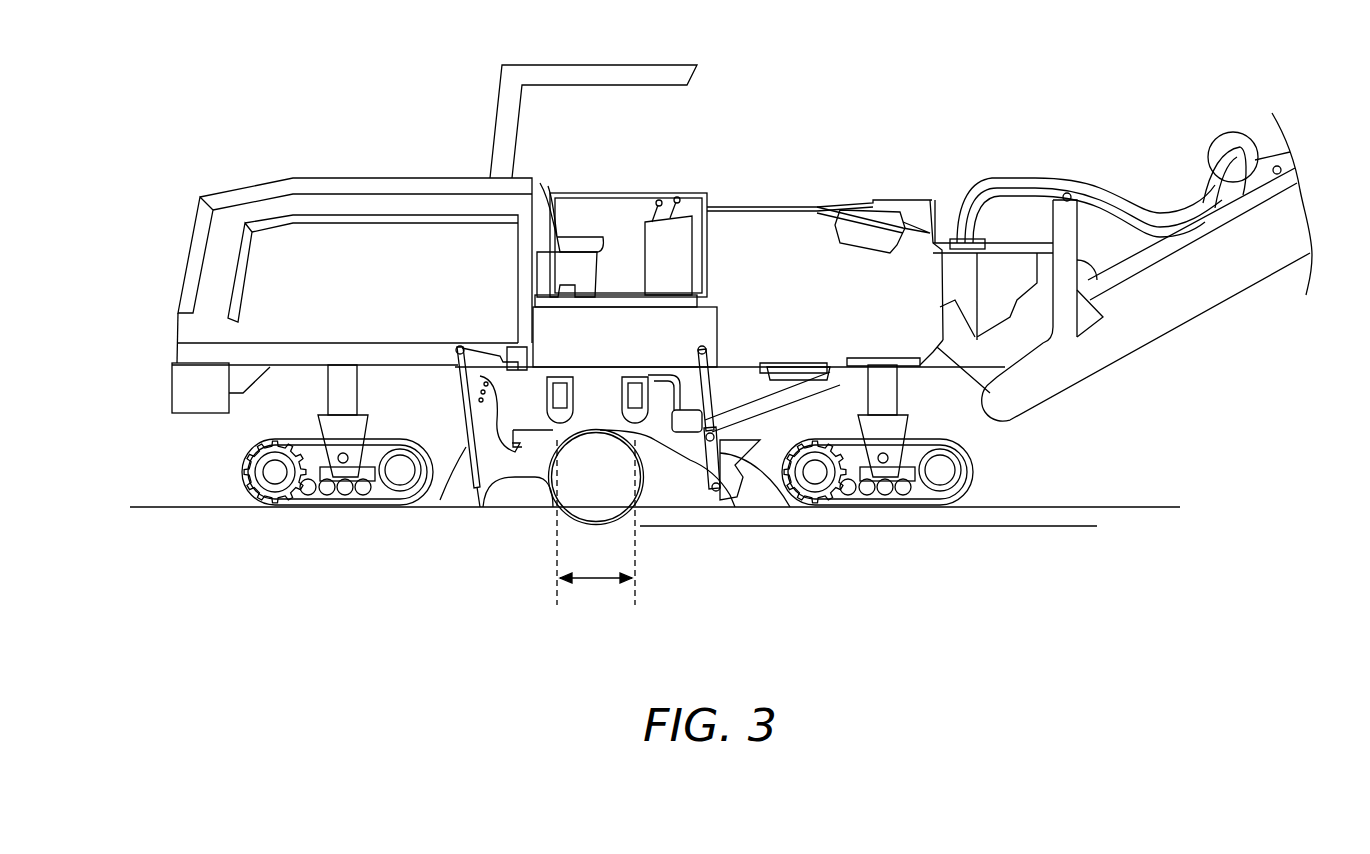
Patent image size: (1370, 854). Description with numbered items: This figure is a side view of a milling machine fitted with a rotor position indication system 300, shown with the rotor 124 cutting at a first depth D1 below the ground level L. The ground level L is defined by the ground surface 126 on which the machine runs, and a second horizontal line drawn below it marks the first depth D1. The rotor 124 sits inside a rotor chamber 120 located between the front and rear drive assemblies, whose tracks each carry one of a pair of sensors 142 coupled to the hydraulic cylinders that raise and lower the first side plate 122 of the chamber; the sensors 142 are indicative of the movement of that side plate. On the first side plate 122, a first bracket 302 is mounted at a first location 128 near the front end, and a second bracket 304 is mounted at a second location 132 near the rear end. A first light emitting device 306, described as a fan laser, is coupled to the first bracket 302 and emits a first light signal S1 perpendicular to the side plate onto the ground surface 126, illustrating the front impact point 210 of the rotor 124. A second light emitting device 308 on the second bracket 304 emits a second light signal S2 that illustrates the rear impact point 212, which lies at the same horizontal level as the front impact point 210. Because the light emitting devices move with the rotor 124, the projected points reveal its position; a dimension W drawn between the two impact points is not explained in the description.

The rotor chamber 120 is at (507, 520).
The first side plate 122 is at (727, 492).
The rotor 124 is at (553, 510).
The ground surface 126 is at (1157, 507).
The first location 128 is at (695, 475).
The second location 132 is at (513, 407).
The sensors 142 is at (440, 498).
The front impact point 210 is at (636, 508).
The rear impact point 212 is at (550, 508).
The rotor position indication system 300 is at (520, 390).
The first bracket 302 is at (655, 378).
The second bracket 304 is at (558, 387).
The first light emitting device 306 is at (727, 435).
The second light emitting device 308 is at (467, 475).
The first light signal S1 is at (658, 432).
The second light signal S2 is at (483, 505).
The width W is at (597, 580).
The first depth D1 is at (1030, 480).
The ground level L is at (1079, 507).